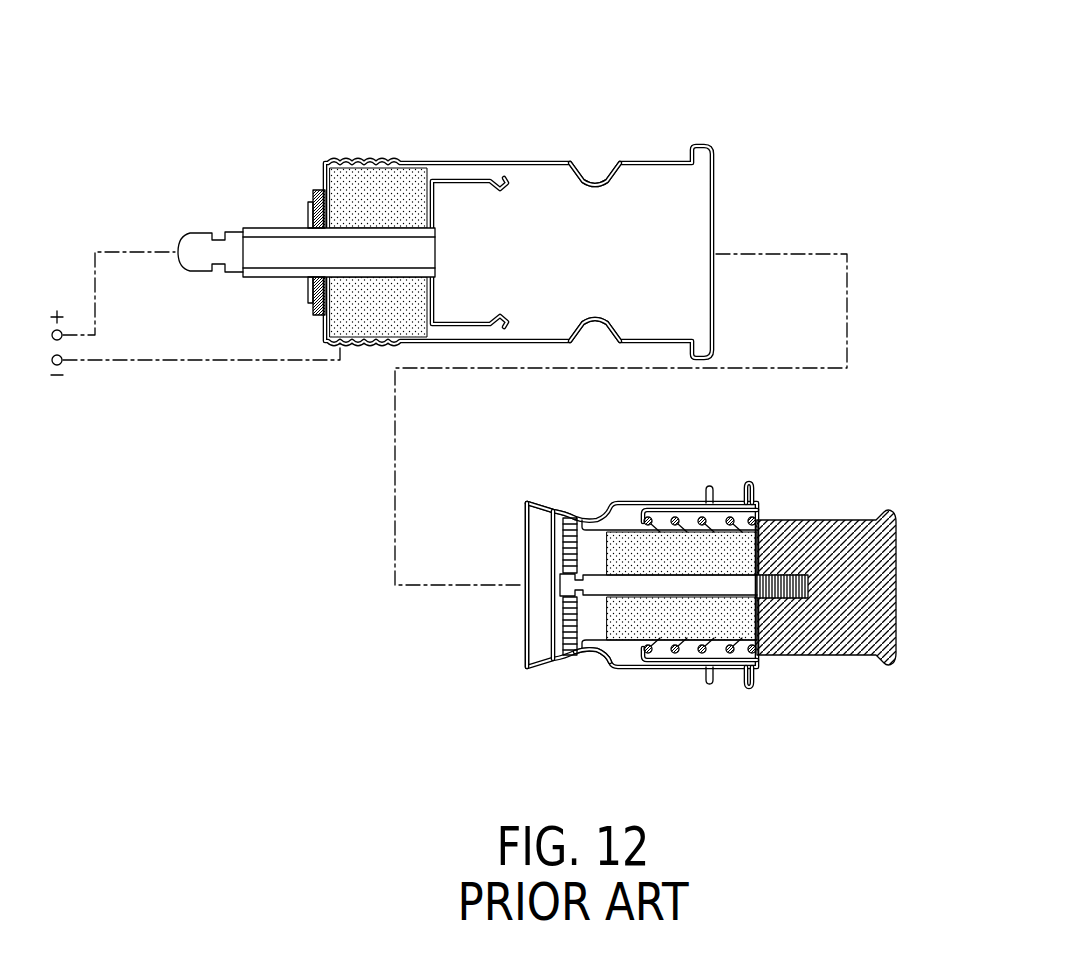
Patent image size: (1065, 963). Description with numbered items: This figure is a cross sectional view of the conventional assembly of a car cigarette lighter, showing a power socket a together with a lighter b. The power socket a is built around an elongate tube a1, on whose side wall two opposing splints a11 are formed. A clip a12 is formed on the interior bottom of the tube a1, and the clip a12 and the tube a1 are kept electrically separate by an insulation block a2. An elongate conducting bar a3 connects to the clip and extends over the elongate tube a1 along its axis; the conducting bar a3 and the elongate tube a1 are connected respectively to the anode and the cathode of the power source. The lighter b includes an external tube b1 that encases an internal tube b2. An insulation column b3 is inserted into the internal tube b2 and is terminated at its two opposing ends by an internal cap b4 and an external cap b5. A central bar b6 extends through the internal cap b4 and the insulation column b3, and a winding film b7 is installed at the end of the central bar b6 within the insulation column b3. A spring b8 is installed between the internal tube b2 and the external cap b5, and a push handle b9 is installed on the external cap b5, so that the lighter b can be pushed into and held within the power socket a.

The power socket a is at (345, 122).
The elongate tube a1 is at (685, 153).
The splints a11 is at (578, 168).
The clip a12 is at (463, 180).
The insulation block a2 is at (374, 197).
The elongate conducting bar a3 is at (280, 242).
The lighter b is at (787, 700).
The external tube b1 is at (627, 503).
The internal tube b2 is at (730, 503).
The insulation column b3 is at (638, 620).
The internal cap b4 is at (552, 507).
The external cap b5 is at (758, 498).
The central bar b6 is at (600, 657).
The winding film b7 is at (565, 632).
The spring b8 is at (673, 508).
The push handle b9 is at (882, 565).